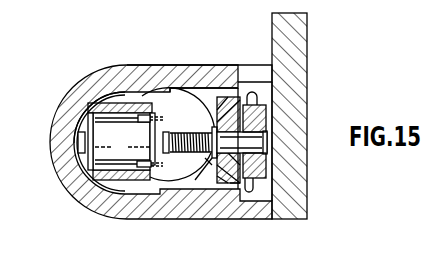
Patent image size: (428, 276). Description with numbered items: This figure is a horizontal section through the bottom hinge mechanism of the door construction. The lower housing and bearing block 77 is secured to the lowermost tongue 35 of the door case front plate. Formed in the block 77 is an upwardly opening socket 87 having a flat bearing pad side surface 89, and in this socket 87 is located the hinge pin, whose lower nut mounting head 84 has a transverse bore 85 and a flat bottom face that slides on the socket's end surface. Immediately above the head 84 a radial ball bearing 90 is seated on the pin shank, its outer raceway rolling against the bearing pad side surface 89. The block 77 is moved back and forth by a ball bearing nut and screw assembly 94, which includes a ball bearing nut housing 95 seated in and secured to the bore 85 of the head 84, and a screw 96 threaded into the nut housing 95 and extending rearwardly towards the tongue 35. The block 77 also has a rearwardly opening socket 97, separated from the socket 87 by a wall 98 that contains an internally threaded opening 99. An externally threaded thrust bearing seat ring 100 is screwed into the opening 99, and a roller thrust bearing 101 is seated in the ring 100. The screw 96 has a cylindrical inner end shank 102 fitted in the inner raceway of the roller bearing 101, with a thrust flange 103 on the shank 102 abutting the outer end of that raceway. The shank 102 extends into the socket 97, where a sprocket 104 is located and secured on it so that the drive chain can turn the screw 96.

The tongue 35 is at (309, 206).
The lower housing and bearing block 77 is at (82, 209).
The nut mounting head 84 is at (113, 182).
The transverse bore 85 is at (132, 168).
The upwardly opening socket 87 is at (178, 97).
The bearing pad side surface 89 is at (151, 90).
The radial ball bearing 90 is at (109, 97).
The ball bearing nut and screw assembly 94 is at (185, 156).
The ball bearing nut housing 95 is at (124, 133).
The screw 96 is at (197, 132).
The rearwardly opening socket 97 is at (267, 188).
The wall 98 is at (232, 184).
The opening 99 is at (223, 95).
The thrust bearing seat ring 100 is at (216, 182).
The roller thrust bearing 101 is at (205, 163).
The inner end shank 102 is at (268, 135).
The thrust flange 103 is at (207, 160).
The sprocket 104 is at (264, 108).